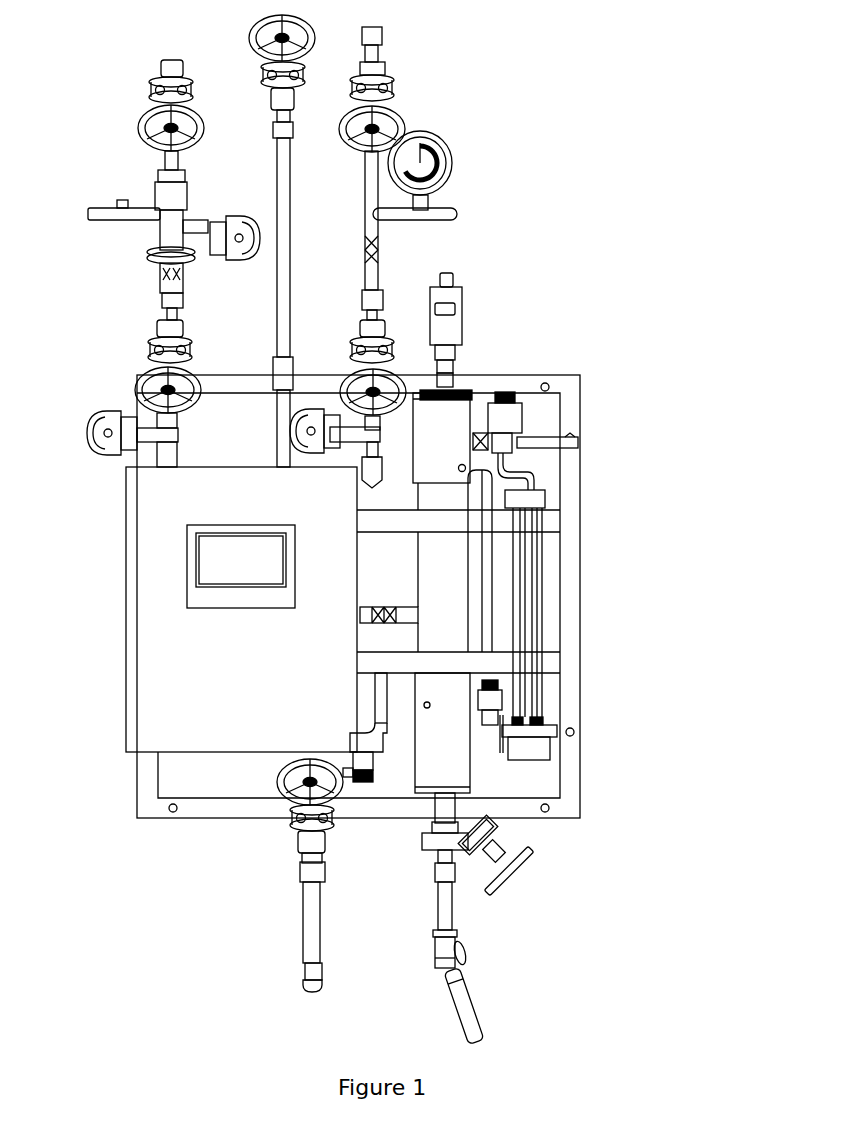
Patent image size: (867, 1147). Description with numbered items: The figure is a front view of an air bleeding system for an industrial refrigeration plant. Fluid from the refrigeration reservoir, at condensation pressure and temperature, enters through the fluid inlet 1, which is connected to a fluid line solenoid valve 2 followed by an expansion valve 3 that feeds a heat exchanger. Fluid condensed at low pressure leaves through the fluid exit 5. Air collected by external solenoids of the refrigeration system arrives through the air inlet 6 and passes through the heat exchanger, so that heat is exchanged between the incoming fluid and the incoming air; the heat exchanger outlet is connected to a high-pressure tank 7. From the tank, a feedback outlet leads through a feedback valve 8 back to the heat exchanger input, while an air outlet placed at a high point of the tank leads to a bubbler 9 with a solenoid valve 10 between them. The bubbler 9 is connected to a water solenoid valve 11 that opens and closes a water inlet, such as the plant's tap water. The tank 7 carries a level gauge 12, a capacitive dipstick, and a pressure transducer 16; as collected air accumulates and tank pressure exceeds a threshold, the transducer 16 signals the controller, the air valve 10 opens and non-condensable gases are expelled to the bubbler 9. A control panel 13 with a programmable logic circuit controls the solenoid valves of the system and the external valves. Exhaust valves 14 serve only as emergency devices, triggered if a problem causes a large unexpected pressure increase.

The fluid inlet 1 is at (165, 60).
The fluid line solenoid valve 2 is at (157, 195).
The expansion valve 3 is at (160, 308).
The fluid exit 5 is at (250, 42).
The air inlet 6 is at (383, 28).
The high-pressure tank 7 is at (453, 763).
The feedback valve 8 is at (363, 760).
The bubbler 9 is at (540, 750).
The solenoid valve 10 is at (497, 703).
The water solenoid valve 11 is at (548, 388).
The level gauge 12 is at (458, 367).
The control panel 13 is at (160, 697).
The exhaust valves 14 is at (203, 370).
The pressure transducer 16 is at (508, 410).